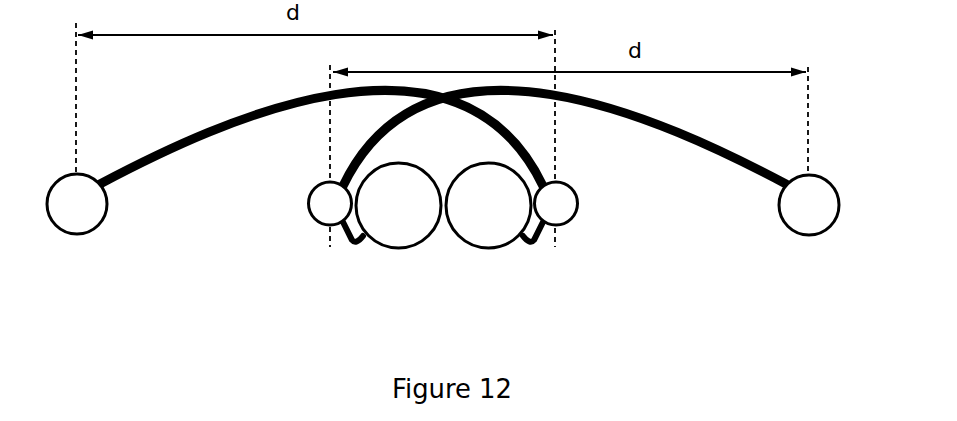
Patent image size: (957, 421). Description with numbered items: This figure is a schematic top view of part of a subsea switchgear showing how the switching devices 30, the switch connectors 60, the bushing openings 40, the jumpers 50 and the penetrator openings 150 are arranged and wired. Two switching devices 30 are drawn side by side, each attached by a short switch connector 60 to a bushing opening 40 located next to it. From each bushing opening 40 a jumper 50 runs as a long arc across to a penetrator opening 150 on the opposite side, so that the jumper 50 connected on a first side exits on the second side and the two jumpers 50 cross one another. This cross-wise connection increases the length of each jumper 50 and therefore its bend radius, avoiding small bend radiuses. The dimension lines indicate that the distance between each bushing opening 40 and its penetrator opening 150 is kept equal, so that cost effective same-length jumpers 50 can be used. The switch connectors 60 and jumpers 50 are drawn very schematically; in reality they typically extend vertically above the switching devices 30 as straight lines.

The switching device 30 is at (403, 248).
The bushing opening 40 is at (320, 226).
The jumper 50 is at (256, 118).
The switch connector 60 is at (341, 248).
The penetrator opening 150 is at (75, 238).